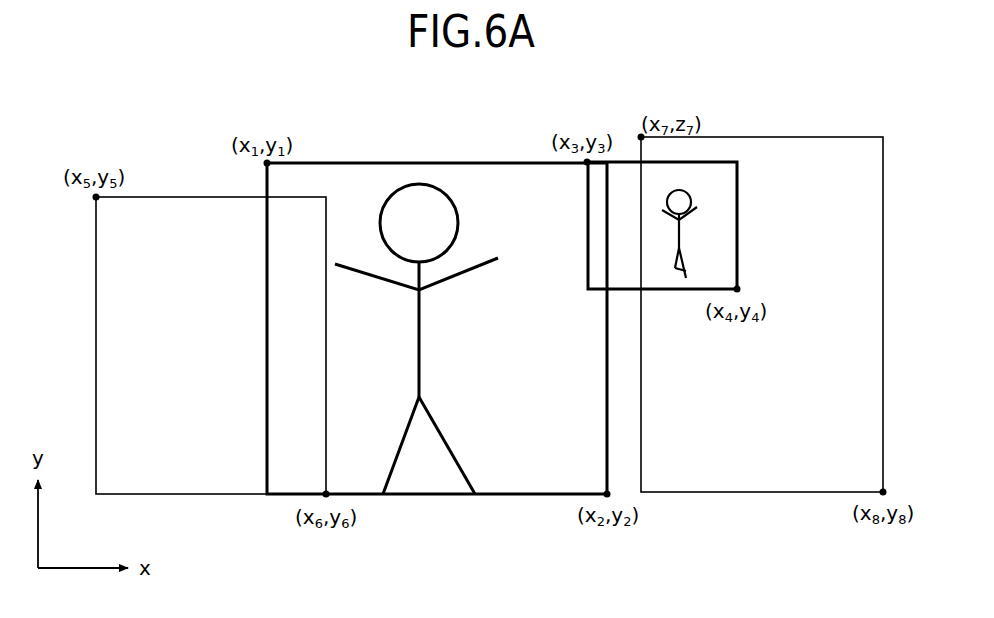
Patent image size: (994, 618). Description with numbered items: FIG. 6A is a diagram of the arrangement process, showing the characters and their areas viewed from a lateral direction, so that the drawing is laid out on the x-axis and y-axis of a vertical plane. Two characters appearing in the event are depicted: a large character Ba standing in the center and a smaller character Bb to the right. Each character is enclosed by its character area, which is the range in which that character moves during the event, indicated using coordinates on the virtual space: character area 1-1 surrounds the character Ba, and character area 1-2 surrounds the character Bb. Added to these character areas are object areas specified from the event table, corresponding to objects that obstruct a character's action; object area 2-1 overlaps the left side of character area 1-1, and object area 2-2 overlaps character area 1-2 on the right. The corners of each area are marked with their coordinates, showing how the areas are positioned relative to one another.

The character area 1-1 is at (365, 159).
The character area 1-2 is at (624, 157).
The object area 2-1 is at (150, 190).
The object area 2-2 is at (794, 131).
The character Ba is at (460, 276).
The character Bb is at (686, 220).